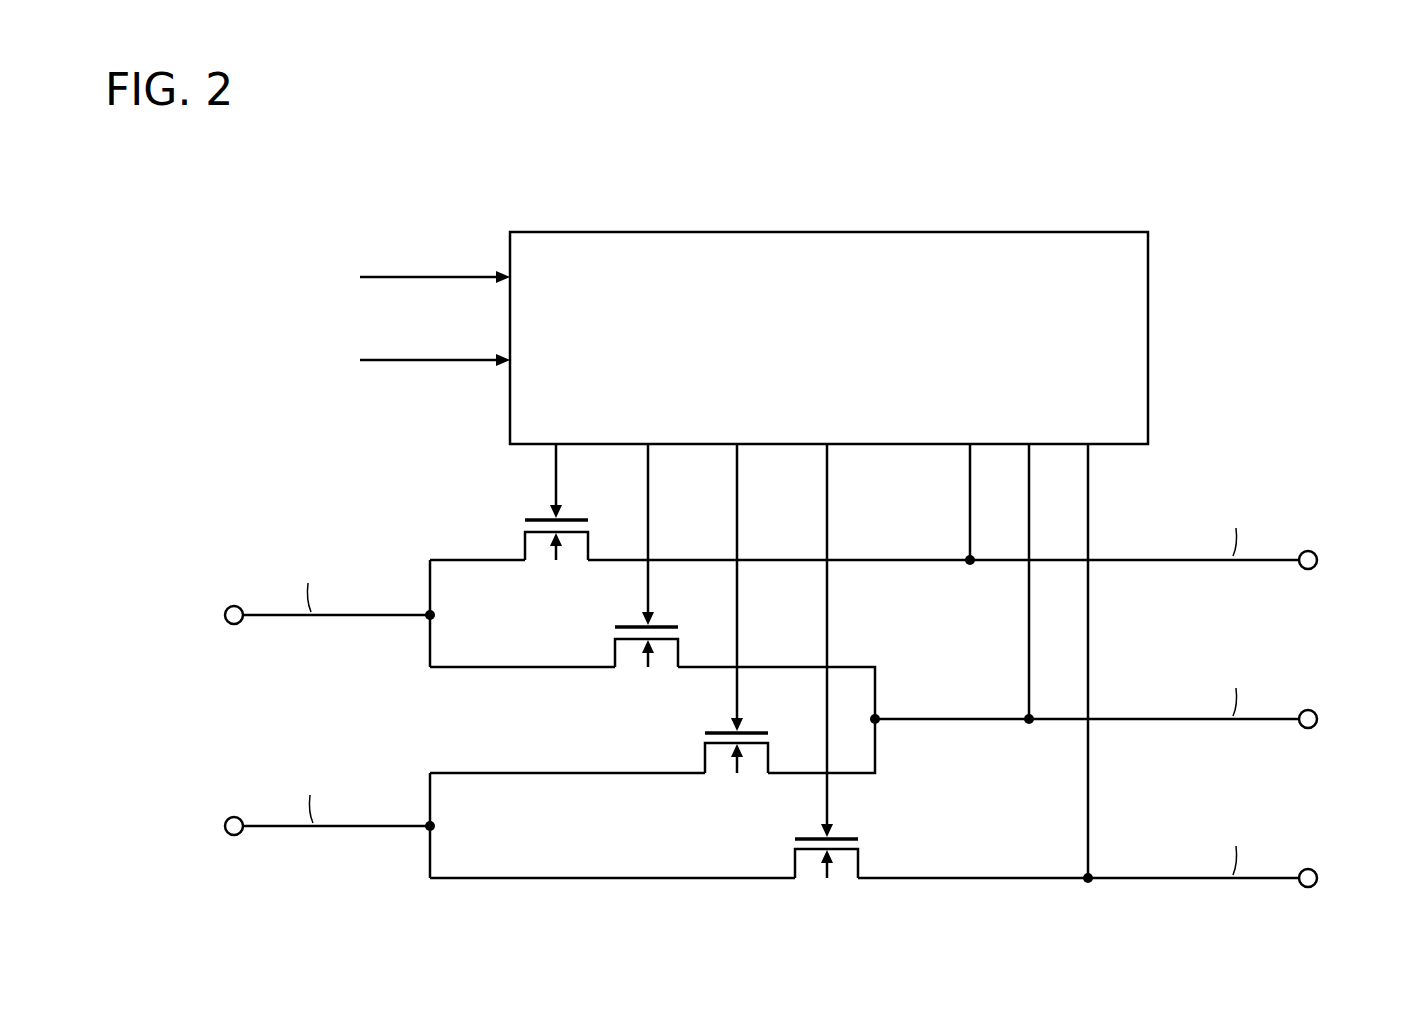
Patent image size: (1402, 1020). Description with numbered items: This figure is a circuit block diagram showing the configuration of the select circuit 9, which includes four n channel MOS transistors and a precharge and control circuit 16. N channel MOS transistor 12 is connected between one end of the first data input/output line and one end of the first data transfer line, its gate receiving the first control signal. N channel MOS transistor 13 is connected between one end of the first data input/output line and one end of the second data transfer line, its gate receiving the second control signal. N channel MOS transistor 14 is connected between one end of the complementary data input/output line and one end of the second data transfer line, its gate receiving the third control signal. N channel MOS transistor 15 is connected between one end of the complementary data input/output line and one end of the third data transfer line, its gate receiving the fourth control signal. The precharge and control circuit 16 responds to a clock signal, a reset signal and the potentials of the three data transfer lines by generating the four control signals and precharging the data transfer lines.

The select circuit 9 is at (226, 192).
The n channel MOS transistor 12 is at (524, 543).
The n channel MOS transistor 13 is at (614, 652).
The n channel MOS transistor 14 is at (705, 757).
The n channel MOS transistor 15 is at (795, 861).
The precharge and control circuit 16 is at (1150, 305).